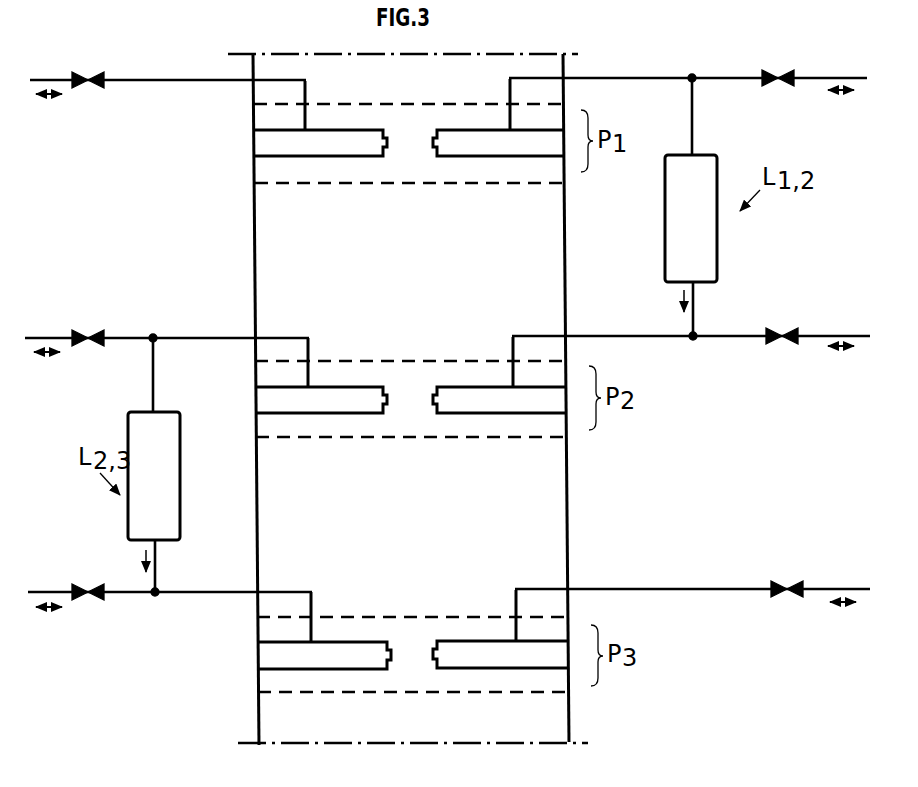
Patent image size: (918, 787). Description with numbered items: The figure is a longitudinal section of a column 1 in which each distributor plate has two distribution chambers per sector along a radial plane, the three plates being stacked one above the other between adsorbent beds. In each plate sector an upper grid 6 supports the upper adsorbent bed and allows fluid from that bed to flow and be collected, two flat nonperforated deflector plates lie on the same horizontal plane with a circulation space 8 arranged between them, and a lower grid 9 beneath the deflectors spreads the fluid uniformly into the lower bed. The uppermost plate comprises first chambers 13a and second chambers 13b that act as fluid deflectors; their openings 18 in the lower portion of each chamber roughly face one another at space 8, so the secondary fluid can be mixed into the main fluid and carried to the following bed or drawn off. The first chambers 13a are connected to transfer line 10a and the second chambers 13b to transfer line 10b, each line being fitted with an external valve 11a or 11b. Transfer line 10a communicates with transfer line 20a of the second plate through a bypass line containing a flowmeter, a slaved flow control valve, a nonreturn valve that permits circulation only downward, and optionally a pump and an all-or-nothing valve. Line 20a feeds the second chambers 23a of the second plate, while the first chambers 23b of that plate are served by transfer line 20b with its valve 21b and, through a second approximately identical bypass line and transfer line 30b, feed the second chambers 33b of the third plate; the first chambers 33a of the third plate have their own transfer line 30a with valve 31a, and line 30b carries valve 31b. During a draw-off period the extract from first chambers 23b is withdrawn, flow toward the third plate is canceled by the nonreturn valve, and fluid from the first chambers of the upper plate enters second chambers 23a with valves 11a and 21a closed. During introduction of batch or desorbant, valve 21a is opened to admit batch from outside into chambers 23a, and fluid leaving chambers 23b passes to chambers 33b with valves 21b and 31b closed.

The fuel cell stack / block 1 is at (193, 213).
The upper grid 6 is at (366, 104).
The circulation space 8 is at (415, 140).
The lower grid 9 is at (277, 184).
The transfer line 10a is at (640, 77).
The transfer line 10b is at (187, 78).
The valve 11a is at (776, 71).
The valve 11b is at (88, 77).
The first chambers 13a is at (489, 157).
The second chambers 13b is at (298, 157).
The openings 18 is at (433, 147).
The transfer line 20a is at (641, 338).
The transfer line 20b is at (192, 337).
The valve 21a is at (773, 338).
The valve 21b is at (90, 332).
The second chambers 23a is at (479, 401).
The first chambers 23b is at (303, 401).
The transfer line 30a is at (640, 588).
The transfer line 30b is at (207, 595).
The valve 31a is at (776, 584).
The valve 31b is at (93, 598).
The first chambers 33a is at (487, 661).
The second chambers 33b is at (298, 661).